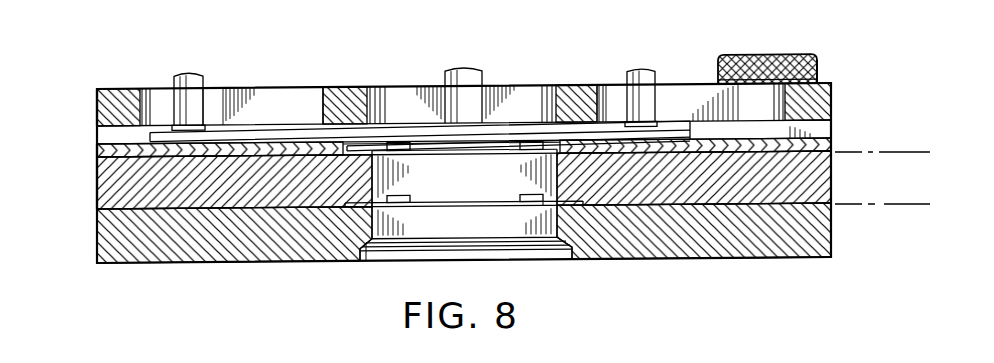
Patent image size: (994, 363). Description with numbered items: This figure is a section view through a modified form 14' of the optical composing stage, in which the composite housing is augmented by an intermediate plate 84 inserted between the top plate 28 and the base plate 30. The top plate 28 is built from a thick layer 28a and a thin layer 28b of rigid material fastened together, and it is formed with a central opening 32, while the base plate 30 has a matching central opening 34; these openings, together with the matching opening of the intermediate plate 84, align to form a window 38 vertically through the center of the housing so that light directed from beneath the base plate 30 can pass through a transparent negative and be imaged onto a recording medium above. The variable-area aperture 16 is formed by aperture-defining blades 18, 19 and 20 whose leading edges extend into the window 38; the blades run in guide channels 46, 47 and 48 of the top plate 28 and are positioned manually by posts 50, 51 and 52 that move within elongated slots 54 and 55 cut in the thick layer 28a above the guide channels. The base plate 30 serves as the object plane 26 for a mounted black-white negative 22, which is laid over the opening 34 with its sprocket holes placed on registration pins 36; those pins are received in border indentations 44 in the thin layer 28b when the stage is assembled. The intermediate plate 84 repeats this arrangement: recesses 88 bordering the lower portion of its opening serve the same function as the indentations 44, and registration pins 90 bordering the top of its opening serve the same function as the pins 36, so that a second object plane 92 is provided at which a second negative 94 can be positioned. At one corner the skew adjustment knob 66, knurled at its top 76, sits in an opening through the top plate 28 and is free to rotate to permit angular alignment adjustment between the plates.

The modified form of optical composing stage 14' is at (464, 131).
The variable-area aperture 16 is at (399, 103).
The aperture-defining blade 18 is at (230, 119).
The aperture-defining blade 19 is at (491, 127).
The aperture-defining blade 20 is at (453, 144).
The black-white negative 22 is at (478, 158).
The object plane 26 is at (881, 153).
The top plate 28 is at (831, 101).
The thick layer 28a is at (97, 114).
The thin layer 28b is at (96, 152).
The base plate 30 is at (832, 219).
The central opening 32 is at (386, 94).
The central opening 34 is at (380, 241).
The registration pins 36 is at (399, 203).
The window 38 is at (568, 262).
The border indentations 44 is at (400, 153).
The guide channel 46 is at (97, 146).
The guide channel 47 is at (803, 137).
The guide channel 48 is at (418, 129).
The post 50 is at (176, 81).
The post 51 is at (658, 75).
The post 52 is at (466, 69).
The elongated slot 54 is at (324, 117).
The elongated slot 55 is at (602, 102).
The skew adjustment knob 66 is at (769, 52).
The knurled top 76 is at (817, 69).
The intermediate plate 84 is at (831, 185).
The indentations or recesses 88 is at (548, 201).
The registration pins 90 is at (531, 136).
The second object plane 92 is at (888, 205).
The second negative 94 is at (473, 204).